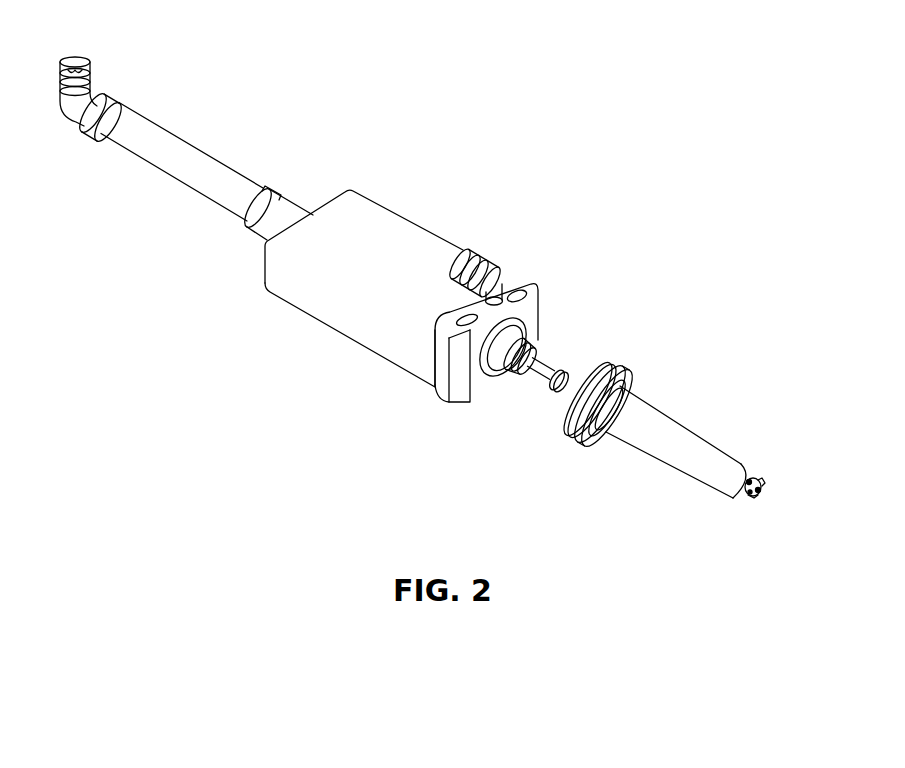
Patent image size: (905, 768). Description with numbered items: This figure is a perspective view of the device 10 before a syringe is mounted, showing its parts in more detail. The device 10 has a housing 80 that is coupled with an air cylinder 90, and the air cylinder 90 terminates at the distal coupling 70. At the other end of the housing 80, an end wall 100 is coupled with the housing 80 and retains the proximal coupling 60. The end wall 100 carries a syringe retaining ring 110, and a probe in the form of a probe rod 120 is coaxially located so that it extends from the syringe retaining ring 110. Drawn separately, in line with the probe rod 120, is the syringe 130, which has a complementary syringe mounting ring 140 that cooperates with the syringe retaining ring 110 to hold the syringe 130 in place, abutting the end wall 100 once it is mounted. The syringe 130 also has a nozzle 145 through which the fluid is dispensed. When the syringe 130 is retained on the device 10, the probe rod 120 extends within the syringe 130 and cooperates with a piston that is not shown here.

The device 10 is at (200, 327).
The proximal coupling 60 is at (488, 245).
The distal coupling 70 is at (112, 68).
The housing 80 is at (404, 205).
The air cylinder 90 is at (234, 154).
The end wall 100 is at (538, 278).
The syringe retaining ring 110 is at (487, 372).
The probe rod 120 is at (531, 388).
The syringe 130 is at (710, 397).
The syringe mounting ring 140 is at (629, 360).
The nozzle 145 is at (775, 474).